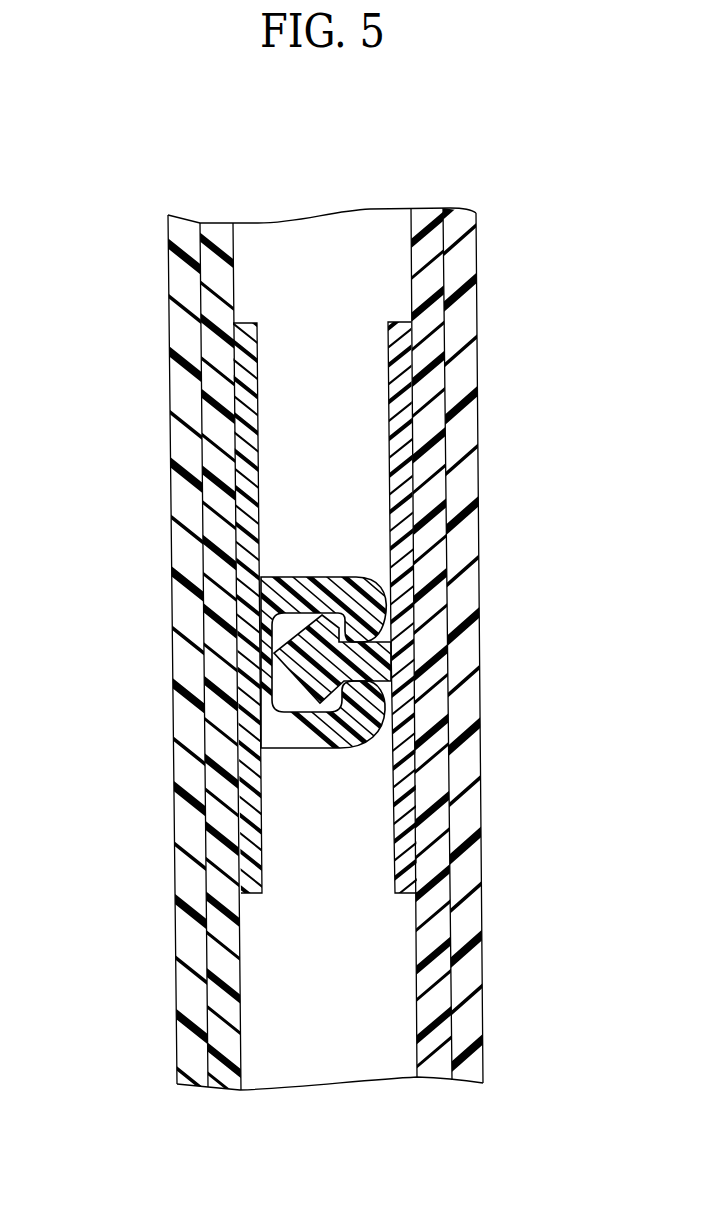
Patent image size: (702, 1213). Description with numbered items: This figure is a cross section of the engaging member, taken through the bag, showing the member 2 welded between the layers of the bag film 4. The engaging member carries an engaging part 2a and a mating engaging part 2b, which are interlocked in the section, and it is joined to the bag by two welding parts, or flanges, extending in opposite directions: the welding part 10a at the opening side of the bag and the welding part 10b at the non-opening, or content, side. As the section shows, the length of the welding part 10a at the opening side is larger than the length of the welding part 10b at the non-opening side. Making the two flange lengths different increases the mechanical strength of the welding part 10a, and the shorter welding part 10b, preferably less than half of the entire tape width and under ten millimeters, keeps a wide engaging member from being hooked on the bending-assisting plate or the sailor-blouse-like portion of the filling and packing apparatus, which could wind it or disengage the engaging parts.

The connector housing 2 is at (325, 601).
The engaging part 2a is at (385, 663).
The resilient clip 2b is at (296, 778).
The outer casing 4 is at (138, 429).
The welding part (flange) at opening side 10a is at (373, 421).
The welding part (flange) at non-opening side 10b is at (376, 844).